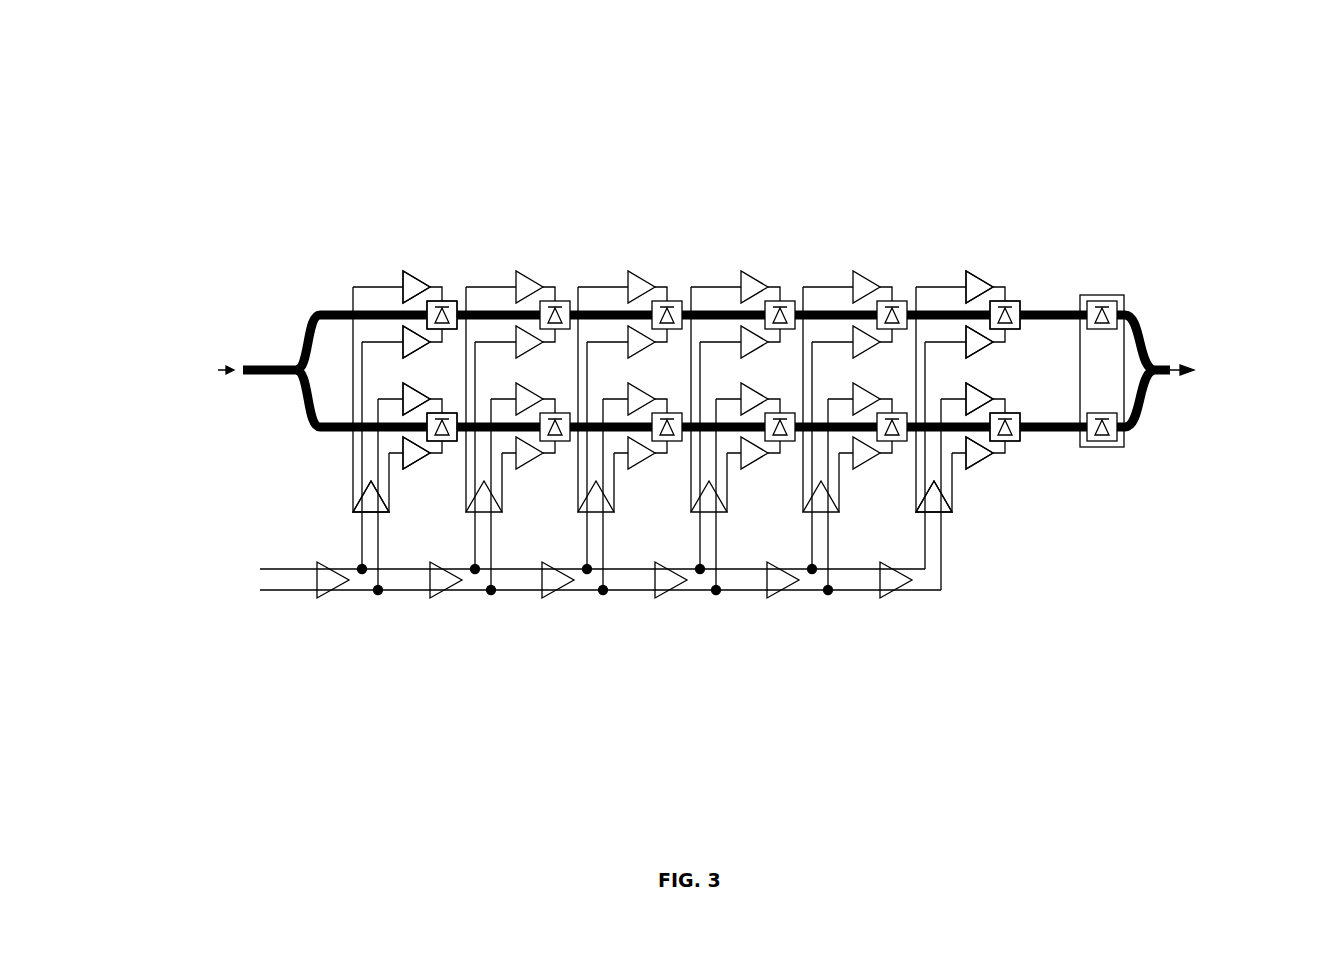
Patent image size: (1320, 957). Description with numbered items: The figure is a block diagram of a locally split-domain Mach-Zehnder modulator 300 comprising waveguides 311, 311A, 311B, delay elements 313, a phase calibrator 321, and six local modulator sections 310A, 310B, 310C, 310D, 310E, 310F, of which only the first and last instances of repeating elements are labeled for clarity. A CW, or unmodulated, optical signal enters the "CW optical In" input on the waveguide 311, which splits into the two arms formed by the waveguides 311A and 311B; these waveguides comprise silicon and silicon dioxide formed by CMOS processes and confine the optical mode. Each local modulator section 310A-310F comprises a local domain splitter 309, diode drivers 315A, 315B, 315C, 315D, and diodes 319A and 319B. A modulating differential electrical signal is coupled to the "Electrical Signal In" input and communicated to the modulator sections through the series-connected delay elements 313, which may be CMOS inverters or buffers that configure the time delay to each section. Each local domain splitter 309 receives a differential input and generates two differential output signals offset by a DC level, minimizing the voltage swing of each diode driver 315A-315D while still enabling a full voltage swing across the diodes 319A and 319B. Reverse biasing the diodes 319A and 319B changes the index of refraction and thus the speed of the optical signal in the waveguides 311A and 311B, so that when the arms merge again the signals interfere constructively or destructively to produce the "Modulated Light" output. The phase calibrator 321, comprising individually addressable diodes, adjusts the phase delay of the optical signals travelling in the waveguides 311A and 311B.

The locally split-domain Mach-Zehnder modulator 300 is at (318, 134).
The local domain splitter 309 is at (355, 513).
The local modulator section 310A is at (413, 204).
The local modulator section 310B is at (538, 237).
The local modulator section 310C is at (631, 204).
The local modulator section 310D is at (748, 237).
The local modulator section 310E is at (848, 204).
The local modulator section 310F is at (948, 237).
The waveguide 311 is at (264, 362).
The waveguide 311A is at (311, 310).
The waveguide 311B is at (314, 433).
The delay element 313 is at (328, 600).
The diode driver 315A is at (420, 282).
The diode driver 315B is at (412, 350).
The diode driver 315C is at (411, 393).
The diode driver 315D is at (408, 462).
The diode 319A is at (450, 300).
The diode 319B is at (452, 442).
The phase calibrator 321 is at (1122, 296).